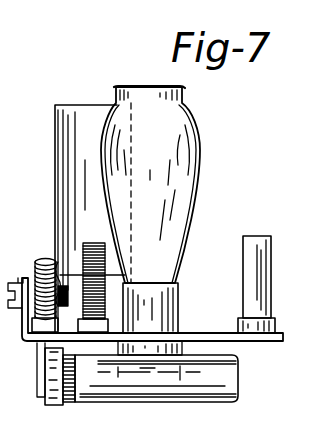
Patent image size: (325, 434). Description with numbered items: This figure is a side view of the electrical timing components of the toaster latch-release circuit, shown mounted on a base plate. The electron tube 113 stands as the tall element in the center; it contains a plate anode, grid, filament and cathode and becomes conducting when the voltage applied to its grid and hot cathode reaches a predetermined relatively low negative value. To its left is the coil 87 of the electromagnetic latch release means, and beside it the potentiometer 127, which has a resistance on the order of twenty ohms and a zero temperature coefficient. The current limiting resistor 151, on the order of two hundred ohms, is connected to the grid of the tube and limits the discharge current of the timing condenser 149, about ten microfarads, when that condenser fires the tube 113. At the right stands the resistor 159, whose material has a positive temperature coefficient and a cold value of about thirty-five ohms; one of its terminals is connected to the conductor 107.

The coil 87 is at (70, 105).
The electron tube 113 is at (193, 118).
The current limiting resistor 151 is at (85, 241).
The potentiometer 127 is at (38, 262).
The resistor 159 is at (272, 284).
The timing condenser 149 is at (238, 372).
The conductor 107 is at (141, 356).